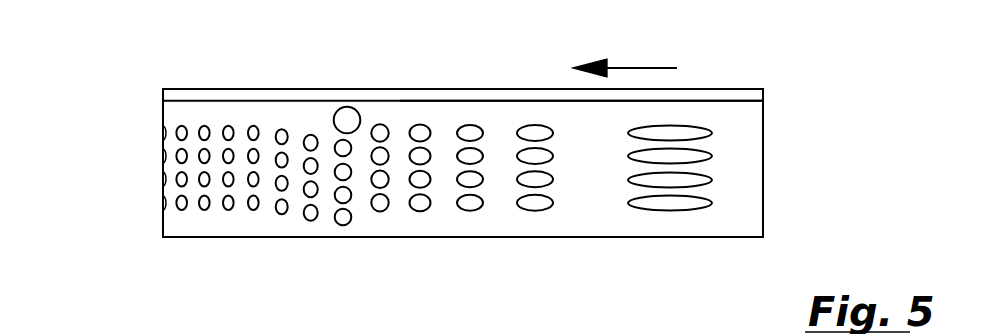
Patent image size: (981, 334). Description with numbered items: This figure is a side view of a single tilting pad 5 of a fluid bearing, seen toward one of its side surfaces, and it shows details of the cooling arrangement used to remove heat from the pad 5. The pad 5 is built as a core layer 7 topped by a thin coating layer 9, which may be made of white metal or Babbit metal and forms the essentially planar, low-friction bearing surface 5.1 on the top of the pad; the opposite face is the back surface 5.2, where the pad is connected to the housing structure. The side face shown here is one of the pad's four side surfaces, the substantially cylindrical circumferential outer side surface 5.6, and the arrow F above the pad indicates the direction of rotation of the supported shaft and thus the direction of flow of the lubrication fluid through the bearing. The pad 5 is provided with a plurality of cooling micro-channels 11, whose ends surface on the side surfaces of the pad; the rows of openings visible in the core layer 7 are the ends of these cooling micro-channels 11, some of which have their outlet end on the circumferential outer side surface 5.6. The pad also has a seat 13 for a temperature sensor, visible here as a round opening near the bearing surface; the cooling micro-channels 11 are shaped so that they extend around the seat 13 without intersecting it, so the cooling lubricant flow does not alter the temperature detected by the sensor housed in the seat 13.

The pad 5 is at (122, 52).
The bearing surface 5.1 is at (262, 88).
The back surface 5.2 is at (398, 237).
The circumferential outer side surface 5.6 is at (473, 110).
The core layer 7 is at (156, 103).
The coating layer 9 is at (153, 89).
The cooling micro-channels 11 is at (309, 137).
The seat 13 is at (348, 118).
The arrow F is at (625, 57).